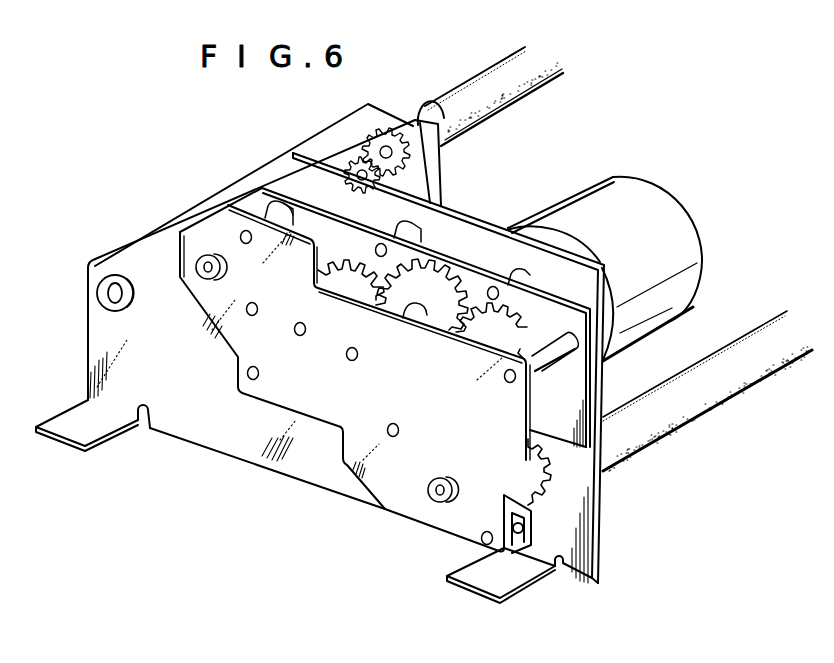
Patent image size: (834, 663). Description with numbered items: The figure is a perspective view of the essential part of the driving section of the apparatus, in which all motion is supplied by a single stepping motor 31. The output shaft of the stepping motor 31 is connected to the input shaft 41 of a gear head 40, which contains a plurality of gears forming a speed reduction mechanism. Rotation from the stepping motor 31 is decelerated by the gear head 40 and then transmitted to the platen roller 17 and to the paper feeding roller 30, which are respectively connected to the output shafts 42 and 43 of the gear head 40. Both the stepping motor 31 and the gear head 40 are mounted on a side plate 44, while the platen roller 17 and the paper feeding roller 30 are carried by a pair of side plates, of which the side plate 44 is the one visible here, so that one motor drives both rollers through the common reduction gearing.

The platen roller 17 is at (469, 88).
The paper feeding roller 30 is at (728, 402).
The stepping motor 31 is at (672, 318).
The gear head 40 is at (381, 480).
The input shaft 41 is at (470, 340).
The output shaft 42 is at (195, 257).
The output shaft 43 is at (436, 499).
The side plate 44 is at (250, 447).